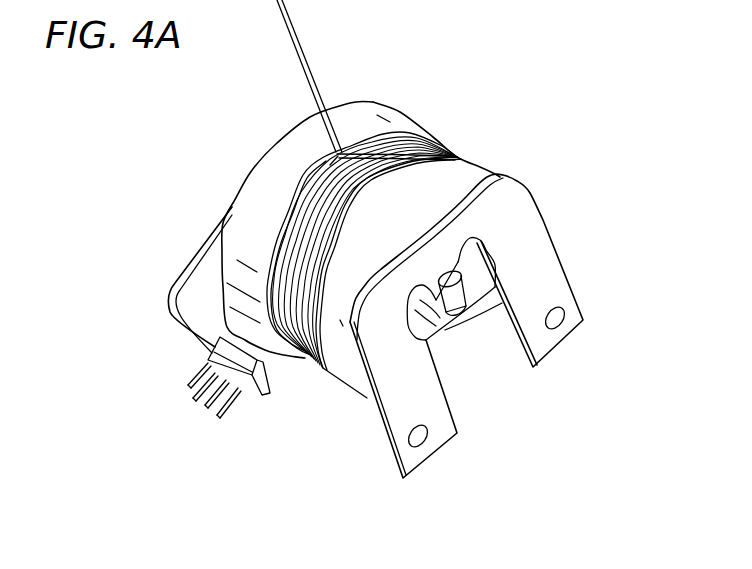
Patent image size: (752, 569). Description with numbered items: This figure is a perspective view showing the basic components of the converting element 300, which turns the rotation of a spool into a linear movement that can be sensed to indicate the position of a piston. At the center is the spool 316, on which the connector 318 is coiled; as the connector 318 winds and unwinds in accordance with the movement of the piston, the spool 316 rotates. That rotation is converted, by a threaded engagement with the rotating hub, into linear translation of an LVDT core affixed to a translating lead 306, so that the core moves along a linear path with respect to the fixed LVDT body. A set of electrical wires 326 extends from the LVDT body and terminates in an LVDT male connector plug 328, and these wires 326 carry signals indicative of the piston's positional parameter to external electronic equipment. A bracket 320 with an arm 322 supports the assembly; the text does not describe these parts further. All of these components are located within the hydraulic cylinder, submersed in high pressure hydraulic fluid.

The converting element 300 is at (543, 107).
The translating lead 306 is at (472, 300).
The spool 316 is at (450, 148).
The connector 318 is at (303, 40).
The bracket 320 is at (537, 245).
The bracket arm 322 is at (437, 358).
The electrical wires 326 is at (197, 253).
The LVDT male connector plug 328 is at (256, 395).